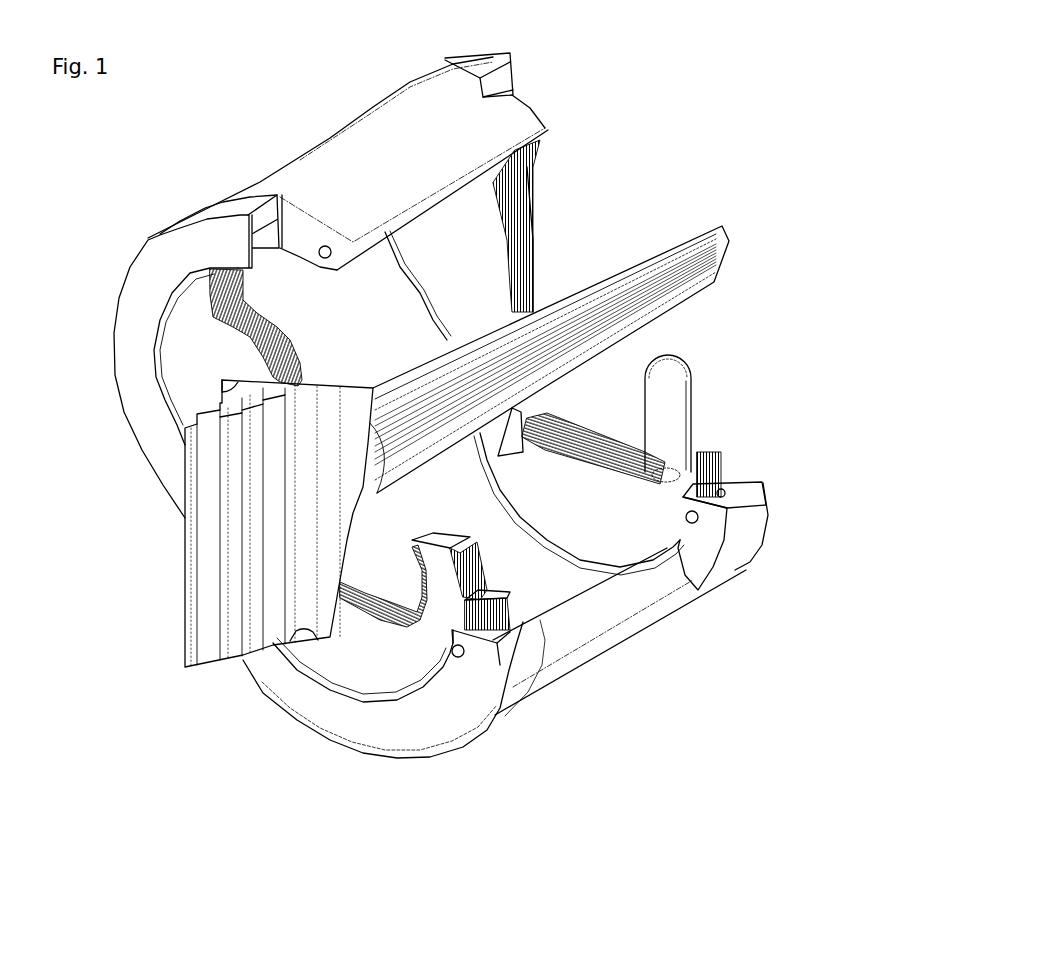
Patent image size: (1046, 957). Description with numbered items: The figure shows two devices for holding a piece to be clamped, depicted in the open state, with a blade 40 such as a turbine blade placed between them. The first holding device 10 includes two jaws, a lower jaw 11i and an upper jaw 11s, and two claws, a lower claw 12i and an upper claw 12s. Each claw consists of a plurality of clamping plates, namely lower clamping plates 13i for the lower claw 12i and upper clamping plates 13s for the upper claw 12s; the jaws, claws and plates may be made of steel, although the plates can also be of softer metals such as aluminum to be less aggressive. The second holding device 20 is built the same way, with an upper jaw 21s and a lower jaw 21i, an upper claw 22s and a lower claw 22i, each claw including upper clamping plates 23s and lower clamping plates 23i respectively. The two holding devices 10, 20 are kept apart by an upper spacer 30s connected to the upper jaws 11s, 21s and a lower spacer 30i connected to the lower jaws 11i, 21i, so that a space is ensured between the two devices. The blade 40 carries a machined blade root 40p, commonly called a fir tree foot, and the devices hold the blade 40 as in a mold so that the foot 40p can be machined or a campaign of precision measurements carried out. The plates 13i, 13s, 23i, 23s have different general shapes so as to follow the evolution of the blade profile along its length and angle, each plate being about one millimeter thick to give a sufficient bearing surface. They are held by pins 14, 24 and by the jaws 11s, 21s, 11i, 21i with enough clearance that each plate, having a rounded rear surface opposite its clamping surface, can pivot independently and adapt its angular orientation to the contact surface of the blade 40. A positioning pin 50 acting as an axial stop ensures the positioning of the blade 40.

The holding device 10 is at (145, 215).
The upper jaw 11s is at (162, 277).
The upper claw 12s is at (187, 298).
The upper clamping plates 13s is at (270, 363).
The lower jaw 11i is at (288, 685).
The lower claw 12i is at (372, 668).
The lower clamping plates 13i is at (372, 612).
The pin 14 is at (460, 653).
The second holding device 20 is at (383, 61).
The upper jaw 21s is at (517, 90).
The upper claw 22s is at (483, 197).
The upper clamping plates 23s is at (520, 230).
The upper spacer 30s is at (350, 160).
The lower spacer 30i is at (600, 613).
The lower jaw 21i is at (718, 483).
The lower claw 22i is at (627, 500).
The lower clamping plates 23i is at (580, 430).
The pin 24 is at (692, 520).
The blade 40 is at (670, 290).
The blade root 40p is at (210, 557).
The positioning pin 50 is at (677, 410).